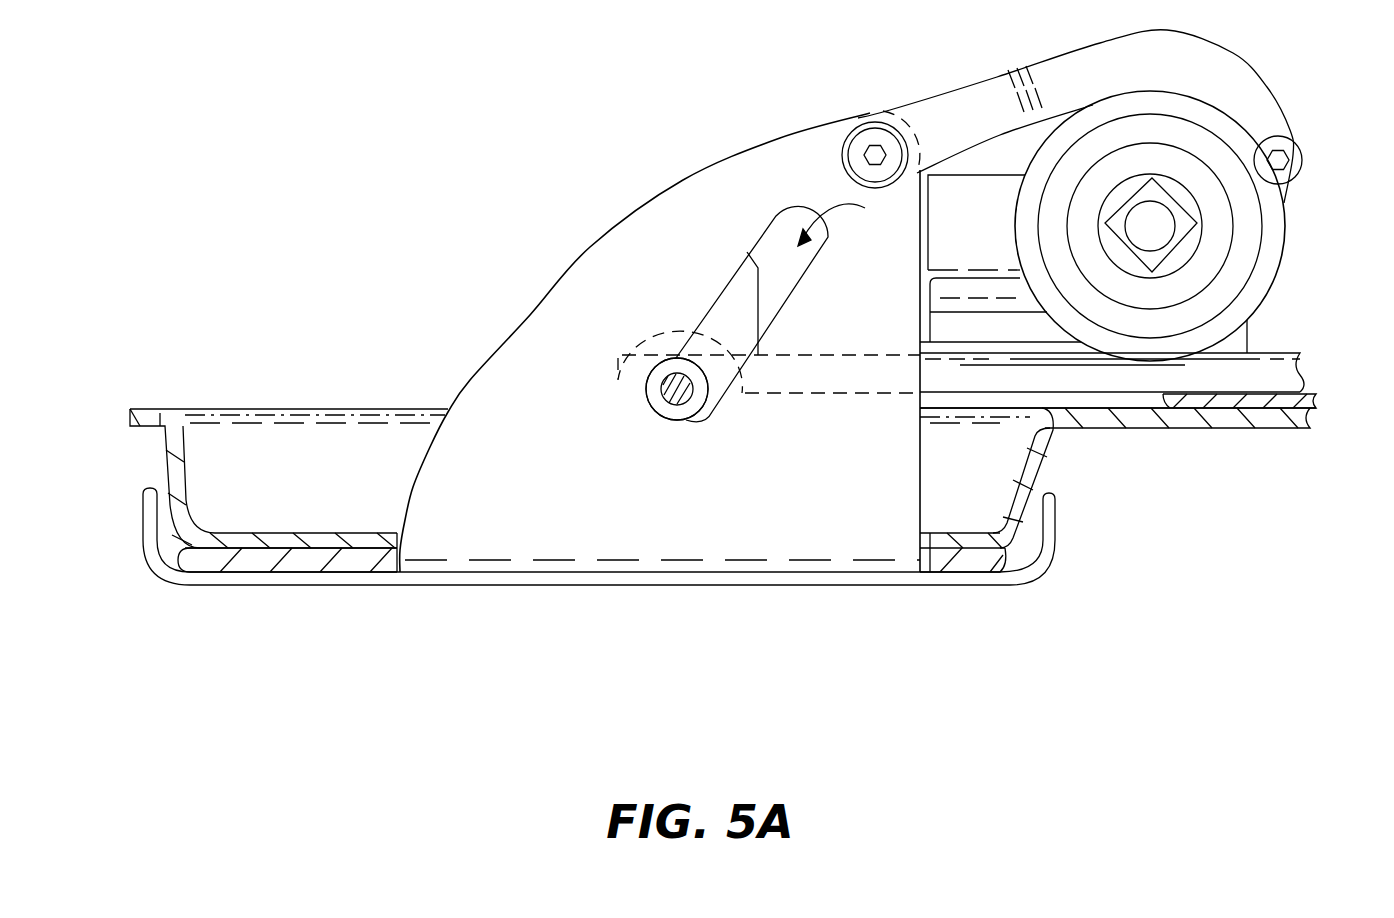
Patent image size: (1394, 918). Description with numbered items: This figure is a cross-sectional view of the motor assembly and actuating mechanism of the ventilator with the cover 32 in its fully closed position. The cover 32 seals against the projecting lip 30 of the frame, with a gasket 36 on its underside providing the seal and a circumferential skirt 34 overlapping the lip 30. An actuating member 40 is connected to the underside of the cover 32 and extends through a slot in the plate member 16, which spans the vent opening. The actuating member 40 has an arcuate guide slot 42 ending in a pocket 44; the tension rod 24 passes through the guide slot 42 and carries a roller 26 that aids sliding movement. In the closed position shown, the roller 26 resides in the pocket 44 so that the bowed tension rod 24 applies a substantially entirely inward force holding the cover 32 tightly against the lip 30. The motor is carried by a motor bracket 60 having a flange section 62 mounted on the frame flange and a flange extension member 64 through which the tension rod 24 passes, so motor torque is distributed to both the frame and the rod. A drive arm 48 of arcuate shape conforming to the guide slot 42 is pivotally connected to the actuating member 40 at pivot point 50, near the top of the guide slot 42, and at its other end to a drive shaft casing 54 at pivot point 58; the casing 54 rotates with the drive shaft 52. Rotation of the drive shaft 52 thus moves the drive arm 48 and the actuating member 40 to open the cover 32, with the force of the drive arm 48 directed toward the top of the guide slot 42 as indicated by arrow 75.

The plate member 16 is at (305, 537).
The tension rod 24 is at (672, 405).
The roller 26 is at (693, 410).
The projecting lip 30 is at (163, 460).
The cover 32 is at (215, 585).
The circumferential skirt 34 is at (140, 532).
The gasket 36 is at (992, 562).
The actuating member 40 is at (556, 328).
The arcuate guide slot 42 is at (722, 308).
The pocket 44 is at (655, 390).
The drive arm 48 is at (1093, 50).
The pivot point 50 is at (874, 145).
The drive shaft 52 is at (1158, 230).
The drive shaft casing 54 is at (1282, 218).
The pivot point 58 is at (1285, 157).
The motor bracket 60 is at (1268, 362).
The flange section 62 is at (1307, 395).
The flange extension member 64 is at (802, 380).
The arrow 75 is at (862, 212).